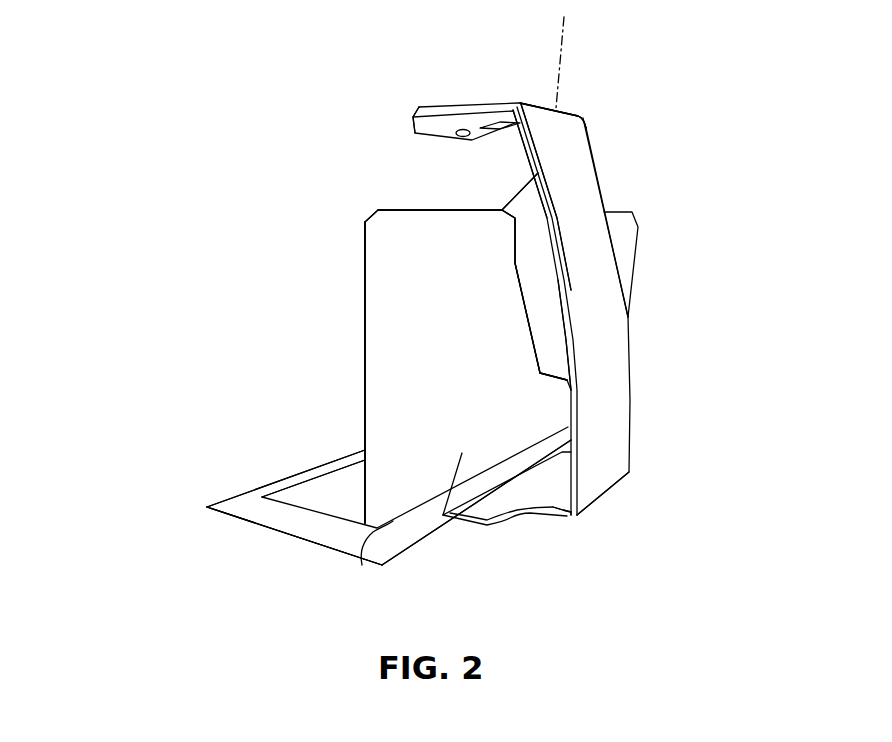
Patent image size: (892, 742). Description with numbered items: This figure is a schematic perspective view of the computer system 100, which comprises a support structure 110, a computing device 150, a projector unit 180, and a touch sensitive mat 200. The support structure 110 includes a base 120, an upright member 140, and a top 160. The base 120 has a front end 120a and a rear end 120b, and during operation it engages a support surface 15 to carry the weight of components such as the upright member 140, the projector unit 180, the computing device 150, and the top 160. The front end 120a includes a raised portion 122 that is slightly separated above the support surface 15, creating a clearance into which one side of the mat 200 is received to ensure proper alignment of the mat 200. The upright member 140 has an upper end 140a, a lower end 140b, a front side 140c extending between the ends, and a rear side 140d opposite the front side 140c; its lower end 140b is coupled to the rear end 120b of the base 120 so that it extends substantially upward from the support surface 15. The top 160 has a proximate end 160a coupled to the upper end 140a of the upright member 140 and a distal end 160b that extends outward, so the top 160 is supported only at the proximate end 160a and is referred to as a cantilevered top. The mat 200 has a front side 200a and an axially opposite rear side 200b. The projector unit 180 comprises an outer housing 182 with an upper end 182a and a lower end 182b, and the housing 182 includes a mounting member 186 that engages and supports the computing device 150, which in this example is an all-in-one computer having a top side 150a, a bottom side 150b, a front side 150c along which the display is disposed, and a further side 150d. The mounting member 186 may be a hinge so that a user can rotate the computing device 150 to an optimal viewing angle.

The computer system 100 is at (225, 222).
The support structure 110 is at (682, 212).
The support surface 15 is at (188, 560).
The base 120 is at (513, 526).
The front end 120a is at (505, 475).
The rear end 120b is at (567, 524).
The raised portion 122 is at (450, 518).
The upright member 140 is at (603, 418).
The upper end 140a is at (583, 113).
The lower end 140b is at (600, 500).
The front side 140c is at (532, 152).
The rear side 140d is at (600, 180).
The computing device 150 is at (365, 232).
The top side 150a is at (430, 209).
The bottom side 150b is at (365, 557).
The front side 150c is at (363, 343).
The back plate face 150d is at (456, 303).
The top 160 is at (503, 90).
The proximate end 160a is at (583, 113).
The distal end 160b is at (408, 127).
The projector unit 180 is at (568, 300).
The outer housing 182 is at (553, 337).
The upper end 182a is at (540, 172).
The lower end 182b is at (552, 380).
The mounting member 186 is at (515, 235).
The touch sensitive mat 200 is at (242, 500).
The front side 200a is at (280, 477).
The rear side 200b is at (400, 564).